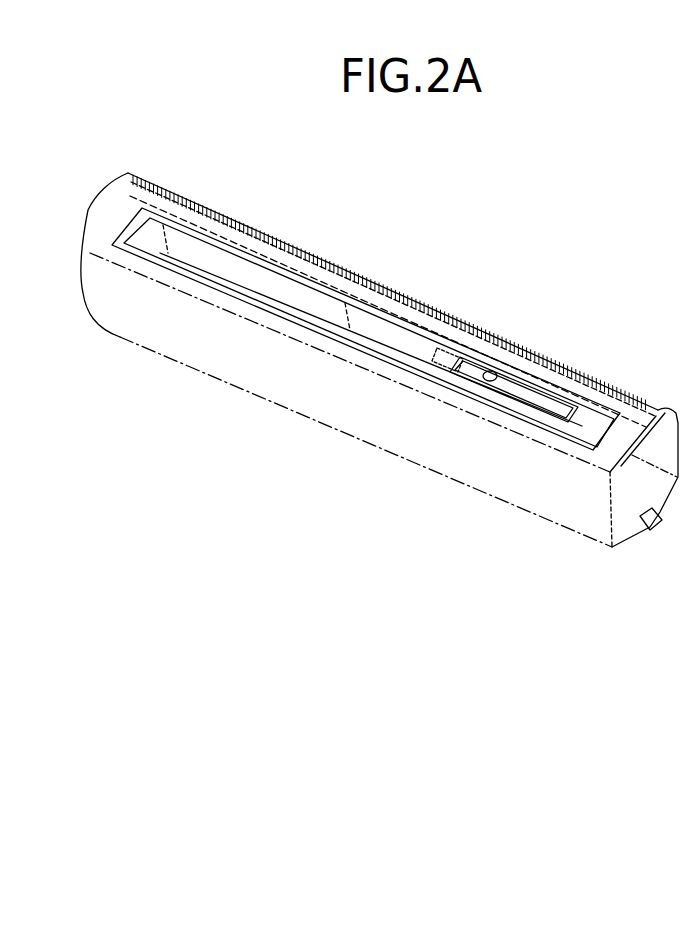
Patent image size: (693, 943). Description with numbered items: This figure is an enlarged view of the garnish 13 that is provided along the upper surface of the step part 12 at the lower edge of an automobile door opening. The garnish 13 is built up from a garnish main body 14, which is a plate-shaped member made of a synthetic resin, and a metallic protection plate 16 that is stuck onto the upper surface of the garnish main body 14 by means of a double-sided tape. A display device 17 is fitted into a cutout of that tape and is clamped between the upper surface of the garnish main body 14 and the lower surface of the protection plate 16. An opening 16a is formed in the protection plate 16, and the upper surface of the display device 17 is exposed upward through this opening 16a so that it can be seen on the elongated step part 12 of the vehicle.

The step part 12 is at (462, 480).
The garnish 13 is at (373, 308).
The garnish main body 14 is at (297, 327).
The protection plate 16 is at (242, 250).
The opening 16a is at (497, 372).
The display device 17 is at (482, 368).